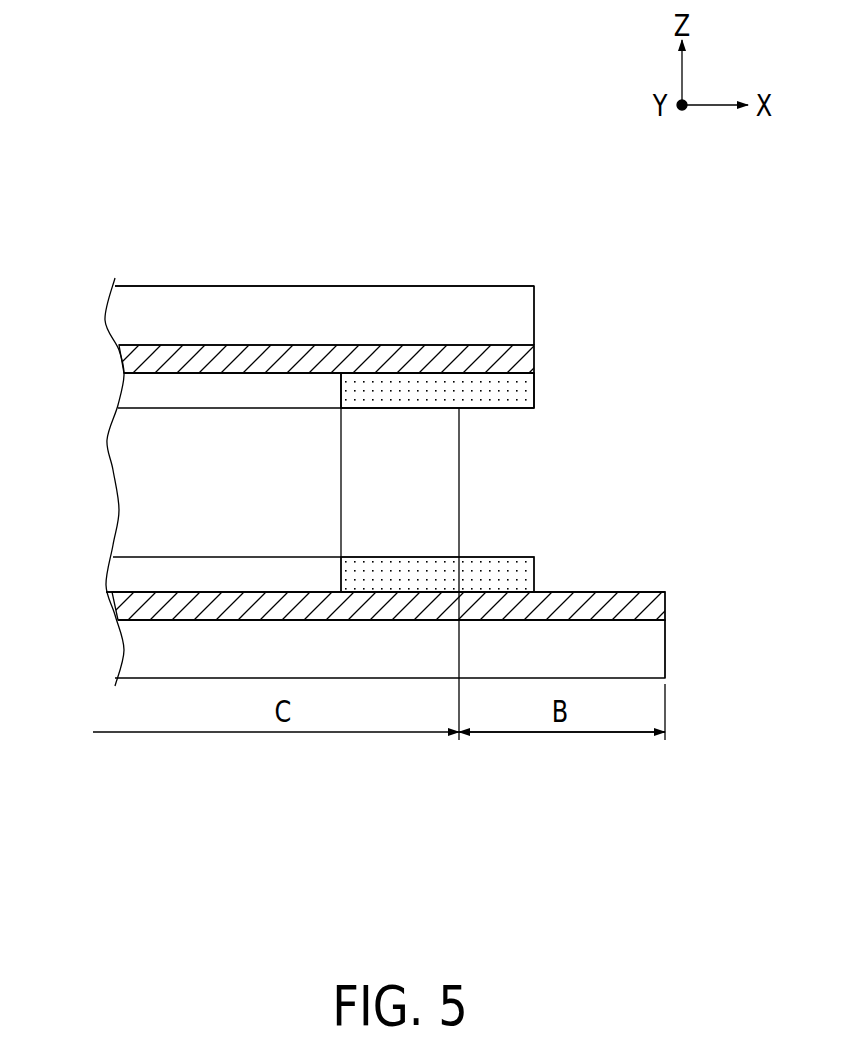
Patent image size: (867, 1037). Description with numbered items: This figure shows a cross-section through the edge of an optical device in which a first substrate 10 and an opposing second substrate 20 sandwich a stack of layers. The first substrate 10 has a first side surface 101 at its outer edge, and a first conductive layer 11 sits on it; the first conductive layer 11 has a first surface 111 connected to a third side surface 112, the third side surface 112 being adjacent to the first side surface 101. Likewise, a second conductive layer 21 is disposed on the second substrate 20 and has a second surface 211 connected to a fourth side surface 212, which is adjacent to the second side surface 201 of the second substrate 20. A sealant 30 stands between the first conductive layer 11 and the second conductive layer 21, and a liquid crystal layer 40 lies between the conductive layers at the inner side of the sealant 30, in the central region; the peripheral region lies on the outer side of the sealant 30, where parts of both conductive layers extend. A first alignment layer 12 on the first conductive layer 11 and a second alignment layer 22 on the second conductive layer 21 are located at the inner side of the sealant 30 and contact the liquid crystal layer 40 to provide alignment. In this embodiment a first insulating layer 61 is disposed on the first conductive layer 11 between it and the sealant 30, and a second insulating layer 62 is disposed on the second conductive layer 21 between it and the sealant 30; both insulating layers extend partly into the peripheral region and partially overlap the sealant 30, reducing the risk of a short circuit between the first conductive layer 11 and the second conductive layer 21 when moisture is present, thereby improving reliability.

The first substrate 10 is at (126, 652).
The first side surface 101 is at (665, 650).
The first conductive layer 11 is at (742, 542).
The first surface 111 is at (638, 592).
The third side surface 112 is at (665, 602).
The first alignment layer 12 is at (114, 576).
The second substrate 20 is at (114, 321).
The second side surface 201 is at (534, 313).
The second conductive layer 21 is at (124, 363).
The second surface 211 is at (525, 375).
The fourth side surface 212 is at (534, 354).
The second alignment layer 22 is at (126, 397).
The sealant 30 is at (450, 488).
The liquid crystal layer 40 is at (122, 490).
The first insulating layer 61 is at (517, 568).
The second insulating layer 62 is at (522, 403).